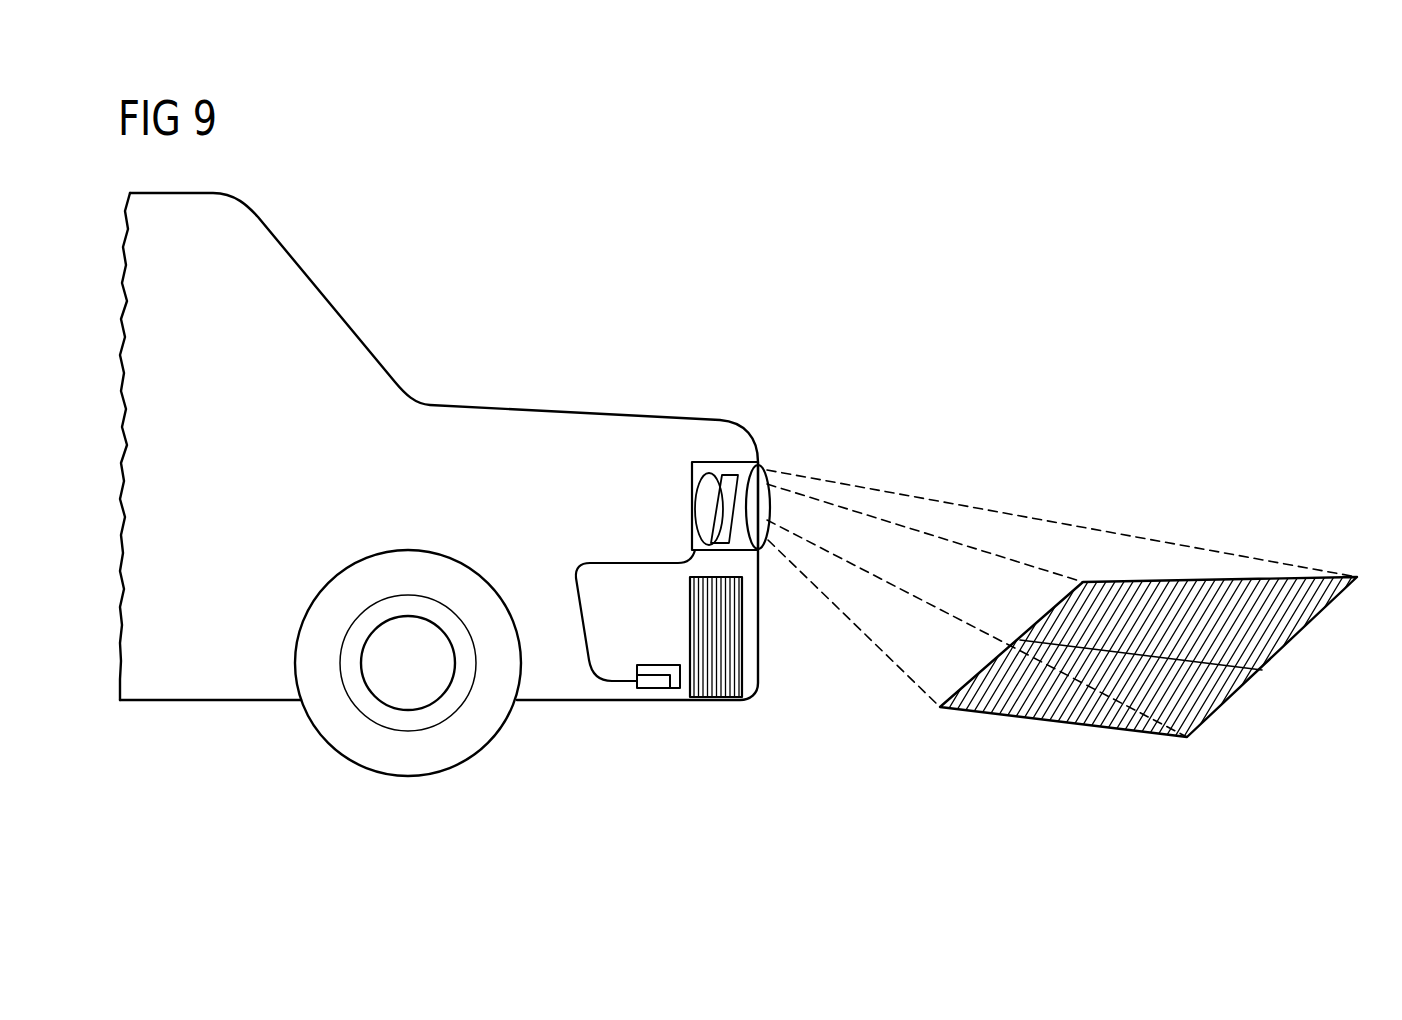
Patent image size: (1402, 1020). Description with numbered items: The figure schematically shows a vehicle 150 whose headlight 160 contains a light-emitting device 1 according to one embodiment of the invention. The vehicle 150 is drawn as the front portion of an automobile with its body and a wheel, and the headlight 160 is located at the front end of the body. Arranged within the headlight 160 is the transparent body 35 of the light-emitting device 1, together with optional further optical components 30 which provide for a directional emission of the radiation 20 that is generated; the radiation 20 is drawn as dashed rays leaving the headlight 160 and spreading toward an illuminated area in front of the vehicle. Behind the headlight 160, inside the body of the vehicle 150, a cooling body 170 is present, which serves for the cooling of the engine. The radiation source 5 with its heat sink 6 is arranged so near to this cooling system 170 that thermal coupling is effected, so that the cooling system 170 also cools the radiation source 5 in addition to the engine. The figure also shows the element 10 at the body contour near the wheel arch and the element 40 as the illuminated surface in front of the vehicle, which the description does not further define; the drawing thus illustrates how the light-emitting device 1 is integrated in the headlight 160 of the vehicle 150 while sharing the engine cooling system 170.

The light-emitting device 1 is at (590, 540).
The radiation source 5 is at (655, 689).
The heat sink 6 is at (673, 665).
The vehicle body 10 is at (583, 616).
The radiation 20 is at (903, 672).
The optical components 30 is at (714, 492).
The transparent body 35 is at (706, 507).
The projection surface 40 is at (1175, 598).
The vehicle 150 is at (752, 290).
The headlight 160 is at (757, 466).
The cooling body 170 is at (730, 650).